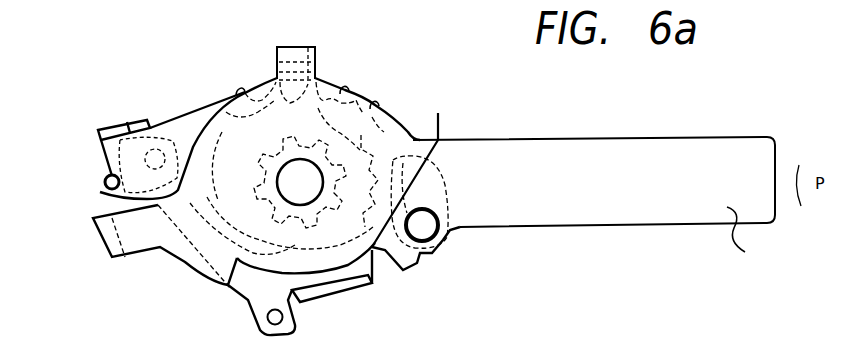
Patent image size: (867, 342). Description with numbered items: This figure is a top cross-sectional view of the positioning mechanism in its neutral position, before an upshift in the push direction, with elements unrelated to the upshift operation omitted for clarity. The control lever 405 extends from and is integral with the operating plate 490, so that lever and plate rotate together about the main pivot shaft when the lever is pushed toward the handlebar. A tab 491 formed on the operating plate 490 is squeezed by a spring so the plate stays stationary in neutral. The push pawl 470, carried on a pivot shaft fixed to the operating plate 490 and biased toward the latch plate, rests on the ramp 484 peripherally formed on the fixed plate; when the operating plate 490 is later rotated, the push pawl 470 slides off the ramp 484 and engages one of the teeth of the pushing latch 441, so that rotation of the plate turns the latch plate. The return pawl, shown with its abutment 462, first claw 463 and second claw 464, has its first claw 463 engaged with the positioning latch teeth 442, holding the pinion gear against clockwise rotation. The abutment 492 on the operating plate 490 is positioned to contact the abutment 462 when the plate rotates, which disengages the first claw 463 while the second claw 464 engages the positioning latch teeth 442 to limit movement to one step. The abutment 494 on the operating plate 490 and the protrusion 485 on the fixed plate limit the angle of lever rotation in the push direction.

The control lever 405 is at (739, 244).
The pushing latch 441 is at (383, 266).
The positioning latch teeth 442 is at (198, 170).
The abutment 462 is at (104, 186).
The first claw 463 is at (193, 194).
The second claw 464 is at (167, 138).
The push pawl 470 is at (437, 190).
The ramp 484 is at (422, 168).
The protrusion 485 is at (345, 293).
The operating plate 490 is at (601, 195).
The tab 491 is at (312, 46).
The abutment 492 is at (108, 260).
The abutment 494 is at (232, 287).